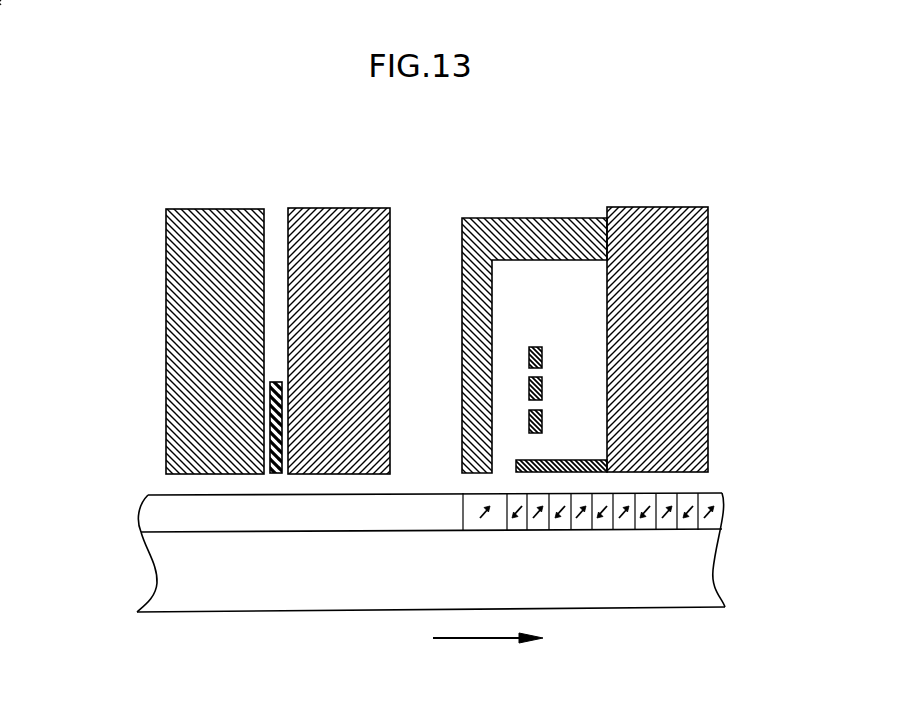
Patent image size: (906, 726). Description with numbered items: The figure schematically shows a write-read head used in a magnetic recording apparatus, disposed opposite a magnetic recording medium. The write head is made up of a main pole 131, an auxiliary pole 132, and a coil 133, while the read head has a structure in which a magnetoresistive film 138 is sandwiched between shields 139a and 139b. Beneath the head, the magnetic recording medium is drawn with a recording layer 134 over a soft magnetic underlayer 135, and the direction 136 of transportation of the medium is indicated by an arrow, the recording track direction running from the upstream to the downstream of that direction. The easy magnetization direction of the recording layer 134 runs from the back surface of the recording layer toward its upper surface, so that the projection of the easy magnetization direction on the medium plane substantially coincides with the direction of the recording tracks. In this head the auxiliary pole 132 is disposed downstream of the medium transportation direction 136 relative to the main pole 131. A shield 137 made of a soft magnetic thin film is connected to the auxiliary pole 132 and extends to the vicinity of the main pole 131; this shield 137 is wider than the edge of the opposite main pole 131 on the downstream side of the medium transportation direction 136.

The main pole 131 is at (472, 422).
The auxiliary pole 132 is at (695, 387).
The coil 133 is at (542, 378).
The recording layer 134 is at (173, 512).
The soft magnetic underlayer 135 is at (182, 580).
The direction of transportation of the medium 136 is at (493, 640).
The shield 137 is at (572, 458).
The magnetoresistive film 138 is at (276, 382).
The shield 139a is at (193, 297).
The shield 139b is at (348, 237).